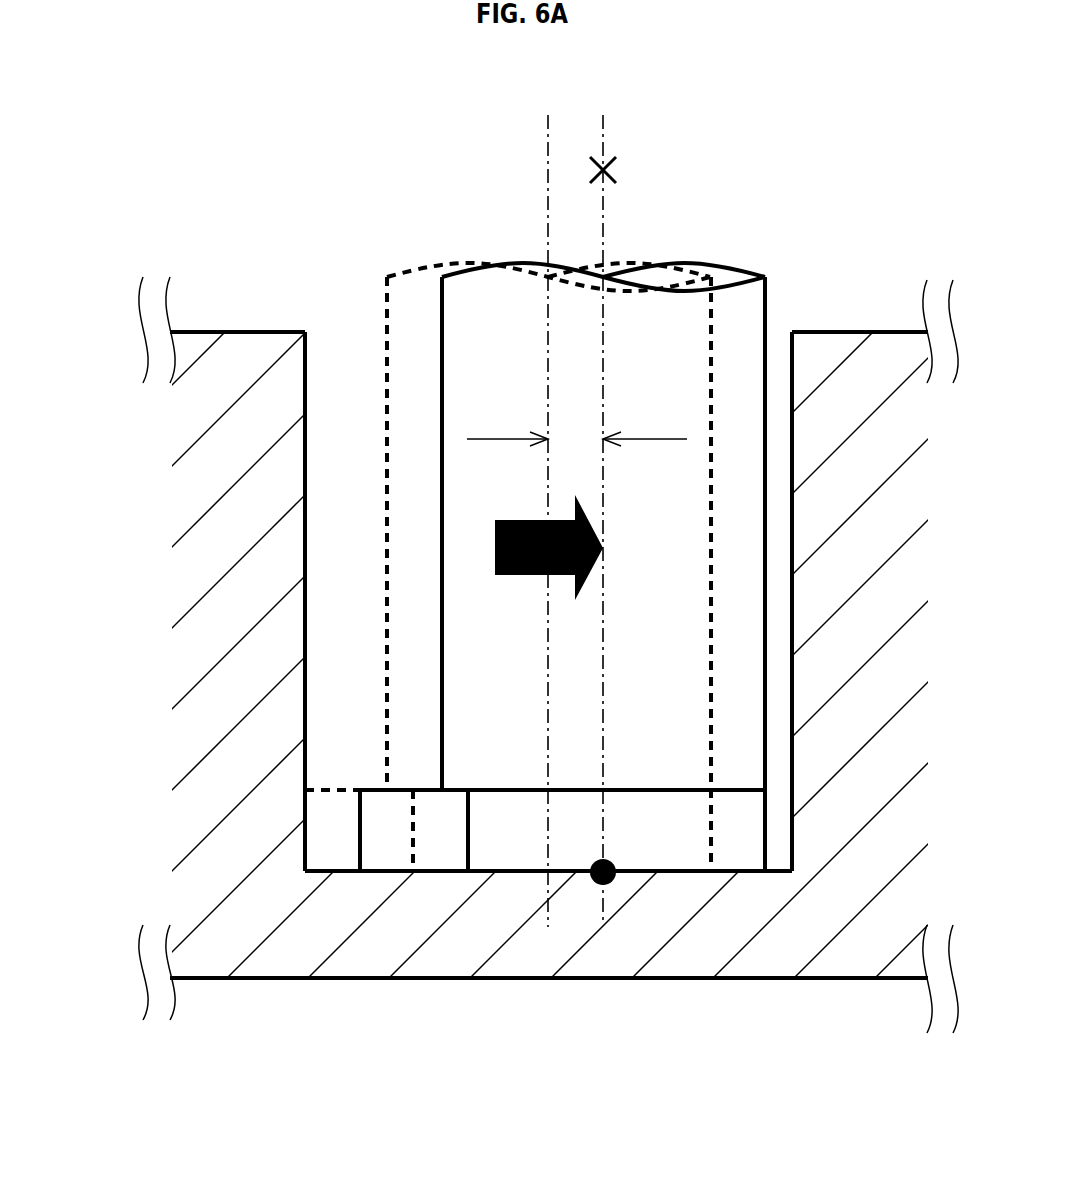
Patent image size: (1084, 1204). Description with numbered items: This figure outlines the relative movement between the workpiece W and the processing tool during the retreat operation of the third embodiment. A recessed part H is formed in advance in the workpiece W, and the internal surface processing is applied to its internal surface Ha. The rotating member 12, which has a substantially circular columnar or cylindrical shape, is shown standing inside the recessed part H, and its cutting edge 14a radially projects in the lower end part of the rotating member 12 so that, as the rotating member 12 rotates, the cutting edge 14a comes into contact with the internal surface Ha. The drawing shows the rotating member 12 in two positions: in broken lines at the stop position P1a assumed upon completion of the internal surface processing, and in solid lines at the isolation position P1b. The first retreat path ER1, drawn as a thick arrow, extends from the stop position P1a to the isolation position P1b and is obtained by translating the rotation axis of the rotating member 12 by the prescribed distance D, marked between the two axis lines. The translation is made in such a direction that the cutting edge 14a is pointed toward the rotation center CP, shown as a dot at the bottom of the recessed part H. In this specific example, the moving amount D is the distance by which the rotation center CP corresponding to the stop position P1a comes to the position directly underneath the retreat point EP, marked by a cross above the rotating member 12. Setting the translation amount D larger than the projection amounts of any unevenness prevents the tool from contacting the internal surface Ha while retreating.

The workpiece W is at (248, 330).
The recessed part H is at (348, 358).
The internal surface Ha is at (306, 636).
The rotating member 12 is at (767, 307).
The cutting edge 14a is at (360, 846).
The stop position P1a is at (430, 233).
The isolation position P1b is at (748, 250).
The retreat point EP is at (610, 168).
The prescribed distance D is at (577, 421).
The first retreat path ER1 is at (523, 575).
The rotation center CP is at (603, 885).